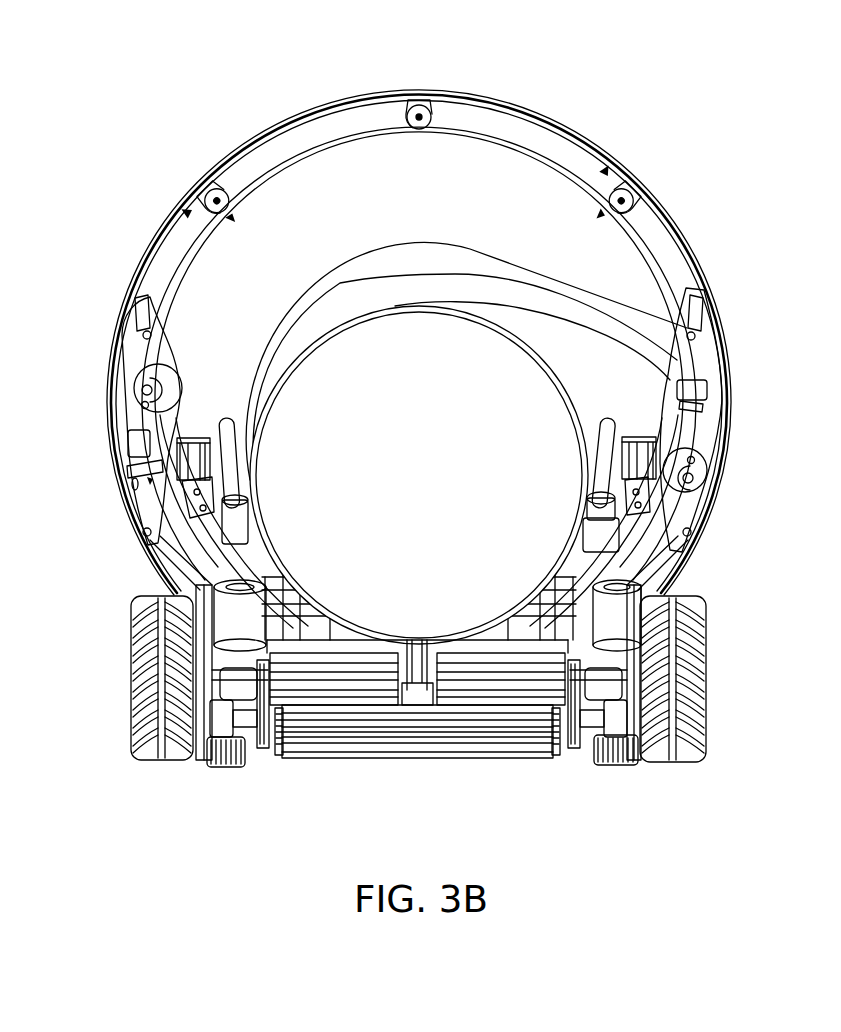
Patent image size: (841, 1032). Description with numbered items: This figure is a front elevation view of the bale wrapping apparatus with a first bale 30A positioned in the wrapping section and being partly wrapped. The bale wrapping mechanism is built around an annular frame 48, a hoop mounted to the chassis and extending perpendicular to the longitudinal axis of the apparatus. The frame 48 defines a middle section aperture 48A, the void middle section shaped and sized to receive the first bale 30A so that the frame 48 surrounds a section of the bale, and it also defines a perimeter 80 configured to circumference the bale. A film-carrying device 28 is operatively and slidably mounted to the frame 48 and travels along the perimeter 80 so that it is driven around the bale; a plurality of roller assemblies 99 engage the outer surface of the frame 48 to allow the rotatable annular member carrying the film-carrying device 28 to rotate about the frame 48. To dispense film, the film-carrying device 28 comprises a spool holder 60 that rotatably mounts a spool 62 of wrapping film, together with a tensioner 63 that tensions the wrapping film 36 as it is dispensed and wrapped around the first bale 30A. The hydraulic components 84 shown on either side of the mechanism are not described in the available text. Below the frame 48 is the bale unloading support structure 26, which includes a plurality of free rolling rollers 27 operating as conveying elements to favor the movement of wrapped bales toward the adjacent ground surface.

The bale unloading support structure 26 is at (376, 776).
The free rolling rollers 27 is at (305, 670).
The film-carrying device 28 is at (471, 312).
The first bale 30A is at (520, 512).
The wrapping film 36 is at (617, 313).
The frame 48 is at (562, 177).
The middle section aperture 48A is at (464, 160).
The spool holder 60 is at (142, 390).
The spool 62 is at (417, 420).
The tensioner 63 is at (150, 496).
The perimeter 80 is at (347, 90).
The hydraulic cylinder rod 84 is at (186, 412).
The roller assemblies 99 is at (411, 102).